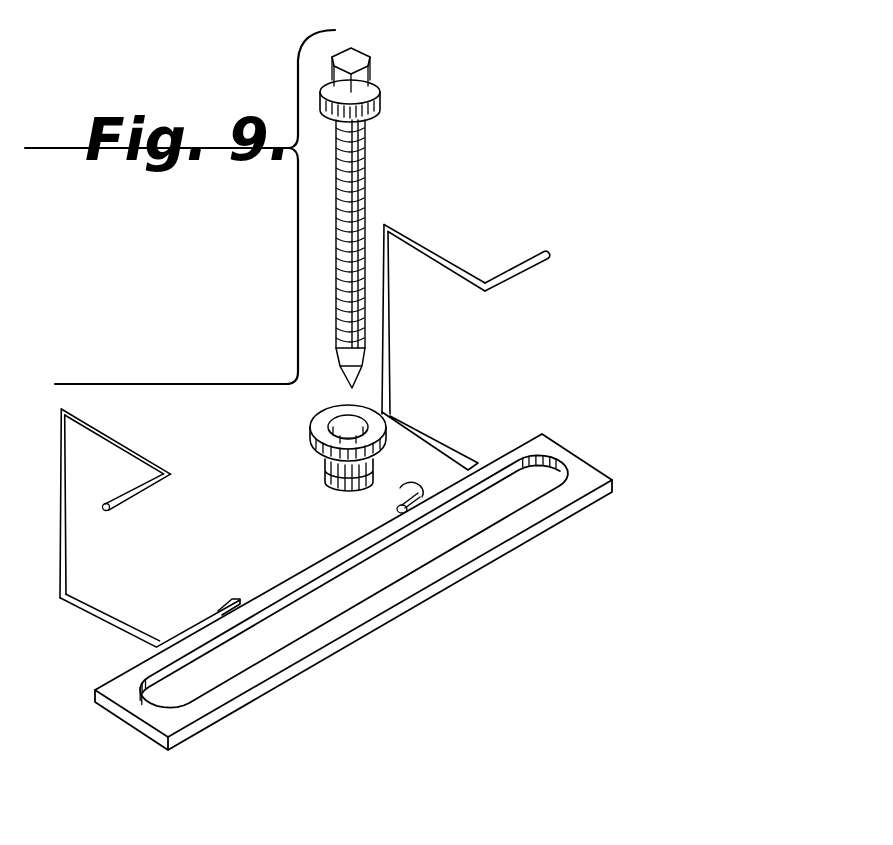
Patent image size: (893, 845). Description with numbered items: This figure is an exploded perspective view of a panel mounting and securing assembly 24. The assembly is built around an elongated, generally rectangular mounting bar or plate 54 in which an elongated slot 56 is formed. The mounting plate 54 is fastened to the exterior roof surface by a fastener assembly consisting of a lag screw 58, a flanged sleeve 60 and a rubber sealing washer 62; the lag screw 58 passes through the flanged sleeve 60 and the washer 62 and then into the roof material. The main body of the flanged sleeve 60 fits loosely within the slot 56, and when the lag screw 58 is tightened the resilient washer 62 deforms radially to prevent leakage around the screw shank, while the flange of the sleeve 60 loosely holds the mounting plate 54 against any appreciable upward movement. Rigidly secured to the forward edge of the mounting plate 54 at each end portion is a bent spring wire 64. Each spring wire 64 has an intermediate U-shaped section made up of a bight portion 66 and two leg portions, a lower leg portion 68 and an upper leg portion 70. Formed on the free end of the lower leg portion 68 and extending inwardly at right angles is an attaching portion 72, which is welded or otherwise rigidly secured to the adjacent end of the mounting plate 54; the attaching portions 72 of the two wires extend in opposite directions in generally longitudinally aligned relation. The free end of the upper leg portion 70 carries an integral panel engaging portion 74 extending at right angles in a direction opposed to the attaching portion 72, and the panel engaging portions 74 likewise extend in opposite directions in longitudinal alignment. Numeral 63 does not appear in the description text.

The panel mounting and securing assembly 24 is at (395, 580).
The mounting bar or plate 54 is at (417, 582).
The elongated slot 56 is at (475, 515).
The lag screw 58 is at (362, 178).
The flanged sleeve 60 is at (327, 463).
The rubber sealing washer 62 is at (327, 475).
The bracket foot 63 is at (90, 603).
The bent spring wire 64 is at (313, 441).
The bight portion 66 is at (88, 545).
The lower leg portion 68 is at (418, 425).
The upper leg portion 70 is at (108, 437).
The attaching portion 72 is at (235, 599).
The panel engaging portion 74 is at (127, 497).